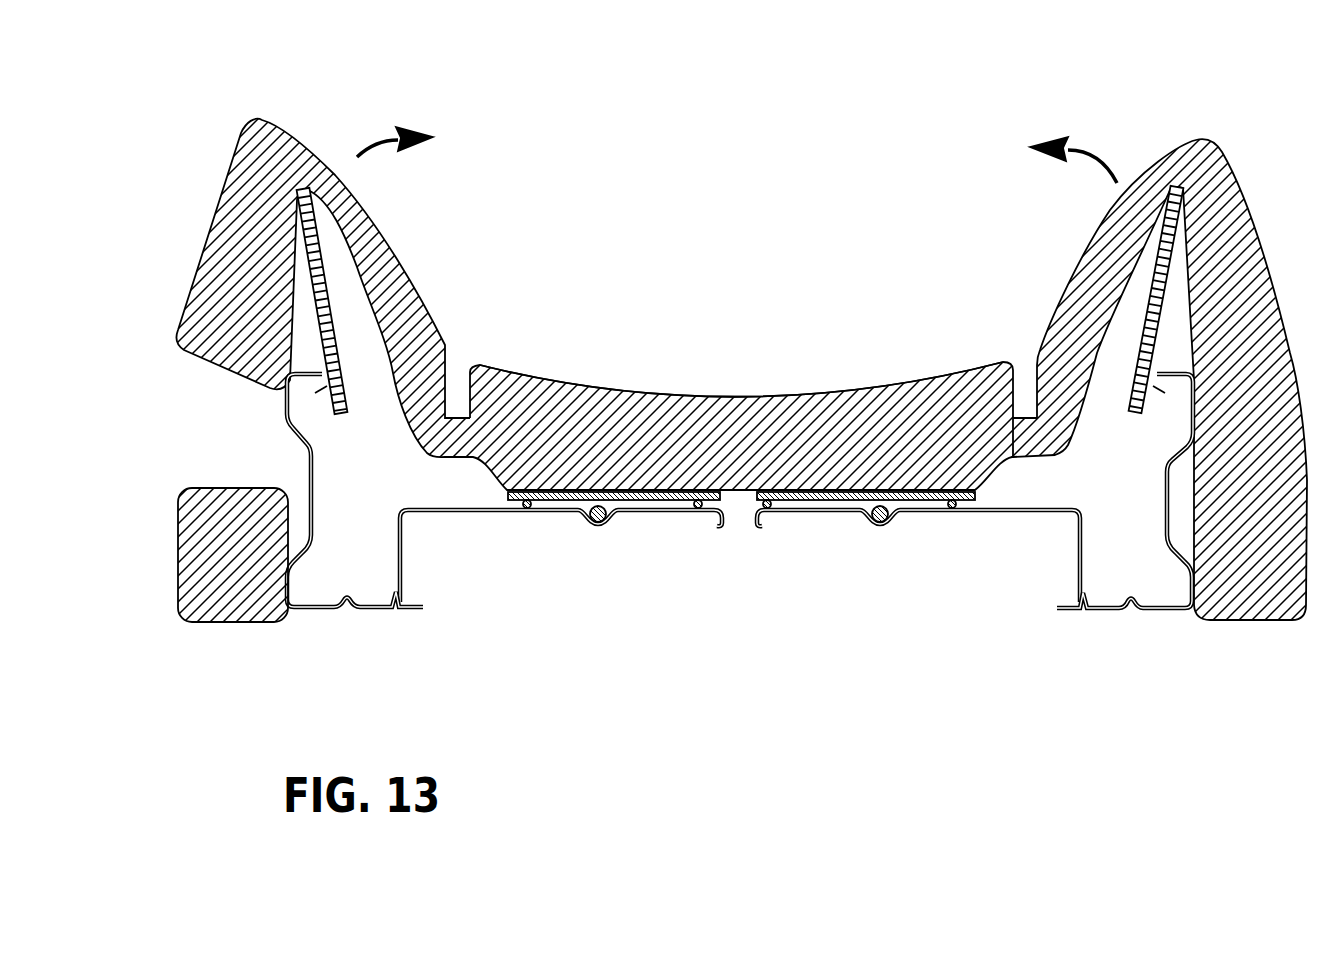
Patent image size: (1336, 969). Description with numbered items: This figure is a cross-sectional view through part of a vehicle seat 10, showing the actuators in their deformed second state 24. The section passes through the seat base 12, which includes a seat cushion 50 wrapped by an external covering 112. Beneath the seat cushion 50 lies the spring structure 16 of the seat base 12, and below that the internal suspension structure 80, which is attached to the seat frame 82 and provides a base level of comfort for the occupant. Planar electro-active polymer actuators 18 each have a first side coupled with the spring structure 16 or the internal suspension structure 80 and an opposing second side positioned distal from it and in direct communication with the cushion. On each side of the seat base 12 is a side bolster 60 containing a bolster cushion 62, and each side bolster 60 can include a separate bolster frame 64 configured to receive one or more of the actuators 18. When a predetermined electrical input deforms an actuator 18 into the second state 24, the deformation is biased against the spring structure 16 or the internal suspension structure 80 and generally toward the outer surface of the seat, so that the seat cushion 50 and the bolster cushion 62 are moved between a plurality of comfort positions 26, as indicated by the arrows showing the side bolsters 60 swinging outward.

The vehicle seat 10 is at (488, 118).
The seat base 12 is at (875, 393).
The spring structure 16 is at (947, 503).
The planar electro-active polymer actuator 18 is at (309, 283).
The second state 24 is at (331, 333).
The comfort positions 26 is at (1151, 137).
The seat cushion 50 is at (773, 405).
The side bolster 60 is at (297, 137).
The bolster cushion 62 is at (230, 226).
The bolster frame 64 is at (293, 440).
The internal suspension structure 80 is at (877, 520).
The seat frame 82 is at (1023, 513).
The external covering 112 is at (572, 375).